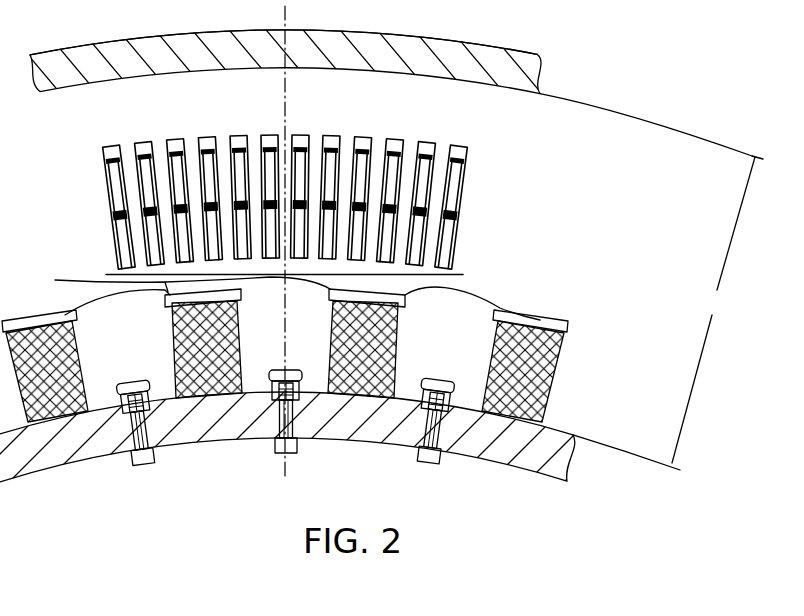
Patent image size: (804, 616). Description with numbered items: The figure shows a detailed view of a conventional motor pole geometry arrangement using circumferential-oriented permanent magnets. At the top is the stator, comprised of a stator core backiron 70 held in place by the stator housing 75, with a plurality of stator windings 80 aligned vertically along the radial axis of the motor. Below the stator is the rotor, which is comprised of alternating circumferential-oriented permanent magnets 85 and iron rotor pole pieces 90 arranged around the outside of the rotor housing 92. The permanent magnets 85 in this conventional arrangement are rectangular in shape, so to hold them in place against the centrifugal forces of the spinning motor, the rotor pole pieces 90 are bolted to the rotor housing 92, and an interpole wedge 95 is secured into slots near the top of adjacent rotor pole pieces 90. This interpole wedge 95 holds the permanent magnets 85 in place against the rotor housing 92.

The stator core backiron 70 is at (105, 103).
The stator housing 75 is at (312, 30).
The stator windings 80 is at (115, 231).
The circumferential-oriented permanent magnets 85 is at (45, 400).
The rotor pole pieces 90 is at (312, 377).
The rotor housing 92 is at (568, 458).
The interpole wedge 95 is at (36, 316).